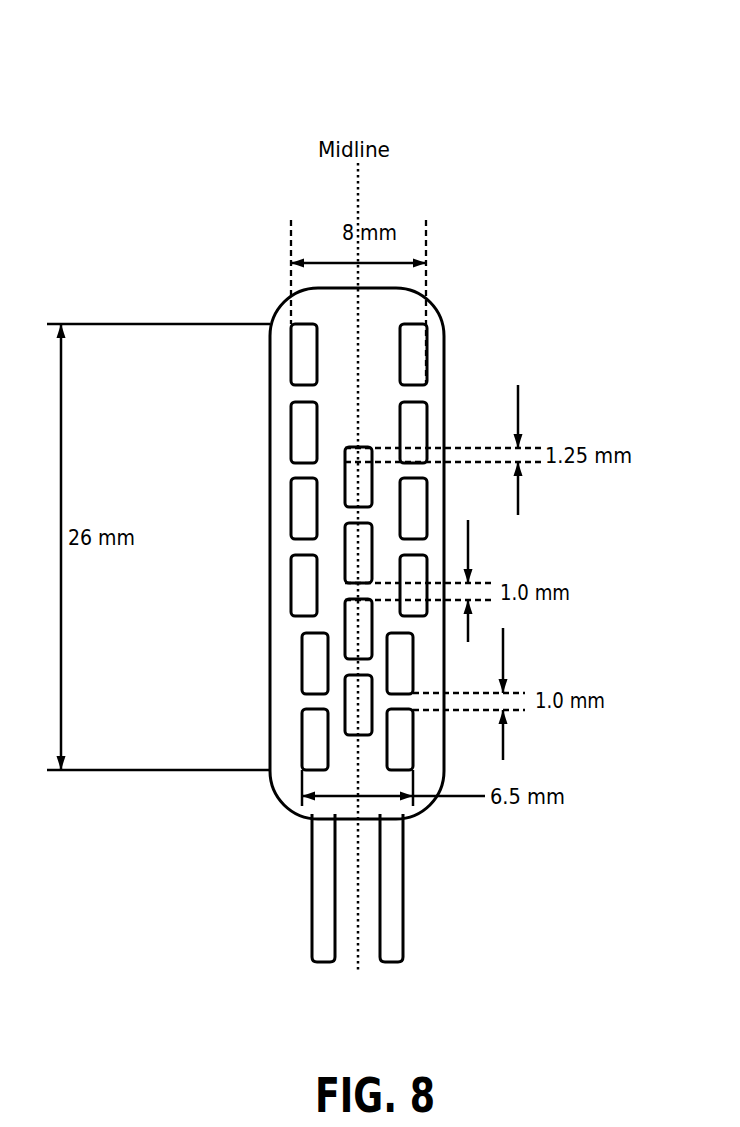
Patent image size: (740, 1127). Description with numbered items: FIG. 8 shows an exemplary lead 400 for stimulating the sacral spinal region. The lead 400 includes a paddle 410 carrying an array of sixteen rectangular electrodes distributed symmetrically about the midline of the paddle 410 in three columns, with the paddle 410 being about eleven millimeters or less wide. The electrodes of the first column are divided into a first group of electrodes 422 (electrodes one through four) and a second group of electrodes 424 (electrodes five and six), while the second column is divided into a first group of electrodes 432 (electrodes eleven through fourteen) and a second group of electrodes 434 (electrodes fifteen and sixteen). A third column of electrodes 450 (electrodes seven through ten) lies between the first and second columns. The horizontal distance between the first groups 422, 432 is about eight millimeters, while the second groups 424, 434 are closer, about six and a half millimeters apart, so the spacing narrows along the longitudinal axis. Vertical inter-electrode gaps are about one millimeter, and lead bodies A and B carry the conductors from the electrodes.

The lead 400 is at (510, 104).
The paddle 410 is at (397, 290).
The first group of electrodes 422 is at (290, 327).
The second group of electrodes 424 is at (302, 738).
The first group of electrodes 432 is at (427, 428).
The second group of electrodes 434 is at (413, 658).
The central column of electrodes 450 is at (345, 492).